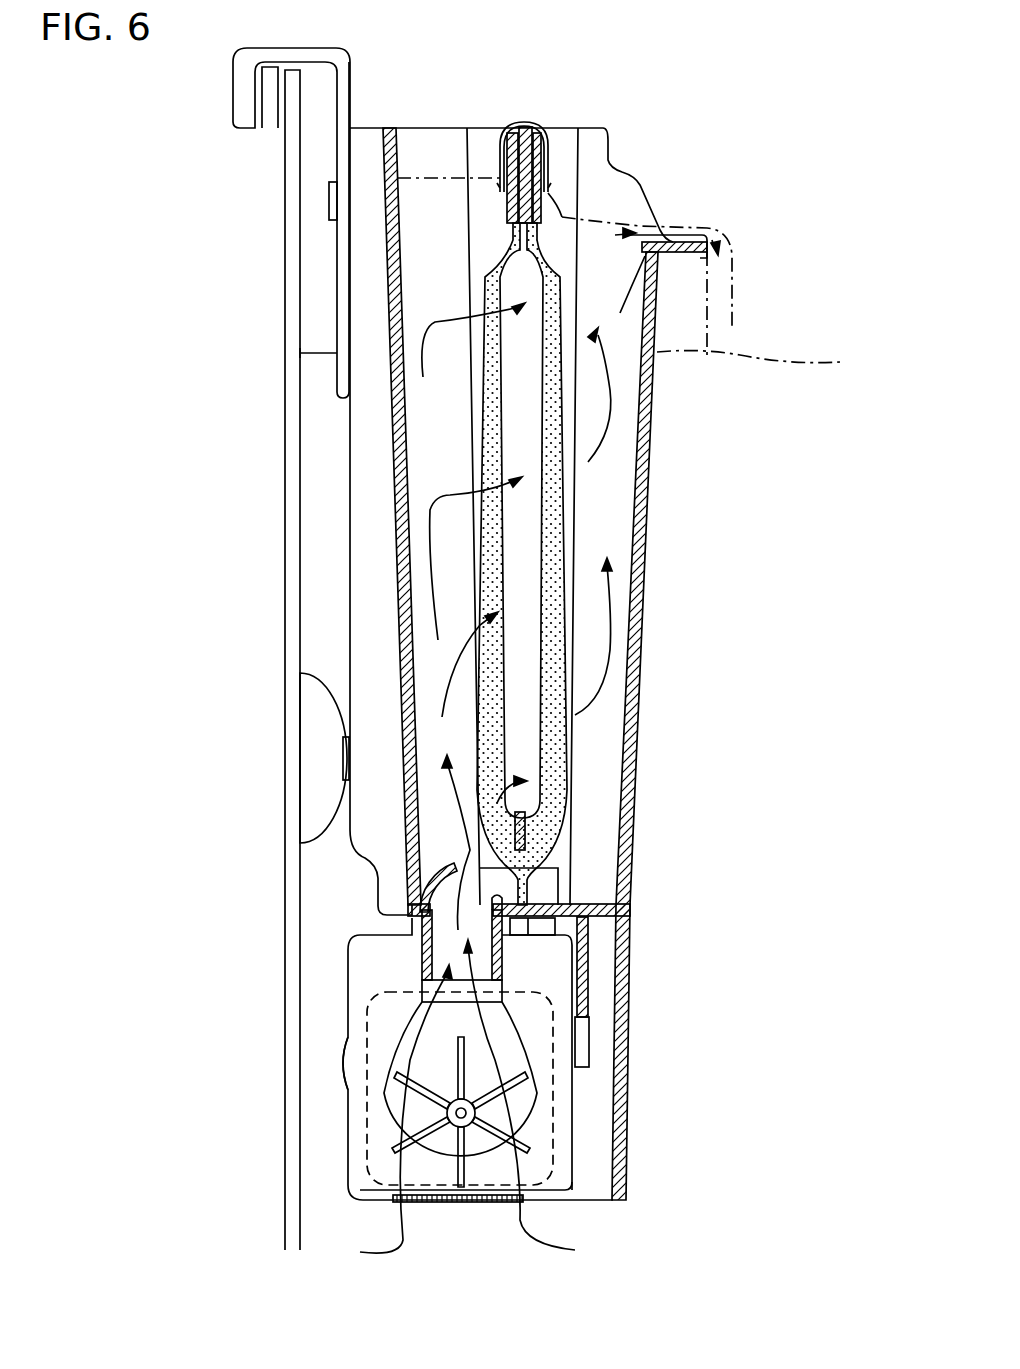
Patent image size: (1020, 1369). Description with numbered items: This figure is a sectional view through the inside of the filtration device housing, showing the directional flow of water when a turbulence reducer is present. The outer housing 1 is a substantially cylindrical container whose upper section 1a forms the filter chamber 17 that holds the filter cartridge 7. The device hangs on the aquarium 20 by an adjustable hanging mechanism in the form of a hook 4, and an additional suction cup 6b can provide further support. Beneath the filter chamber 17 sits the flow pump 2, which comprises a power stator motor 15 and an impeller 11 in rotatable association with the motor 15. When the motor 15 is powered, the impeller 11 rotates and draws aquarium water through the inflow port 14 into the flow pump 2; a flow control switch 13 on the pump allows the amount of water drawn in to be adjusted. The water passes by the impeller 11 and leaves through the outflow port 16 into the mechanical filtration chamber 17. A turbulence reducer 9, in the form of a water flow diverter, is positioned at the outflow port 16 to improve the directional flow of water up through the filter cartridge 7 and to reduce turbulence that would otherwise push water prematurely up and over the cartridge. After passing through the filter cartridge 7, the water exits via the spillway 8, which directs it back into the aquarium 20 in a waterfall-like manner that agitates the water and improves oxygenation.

The outer housing 1 is at (577, 664).
The upper section 1a is at (652, 434).
The flow pump 2 is at (427, 1112).
The hook 4 is at (345, 73).
The suction cup 6b is at (320, 762).
The filter cartridge 7 is at (493, 262).
The spillway 8 is at (673, 257).
The turbulence reducer 9 is at (430, 884).
The impeller 11 is at (463, 1167).
The flow control switch 13 is at (345, 1070).
The inflow port 14 is at (437, 1207).
The power stator motor 15 is at (553, 1128).
The outflow port 16 is at (477, 947).
The filter chamber 17 is at (435, 427).
The aquarium 20 is at (285, 503).